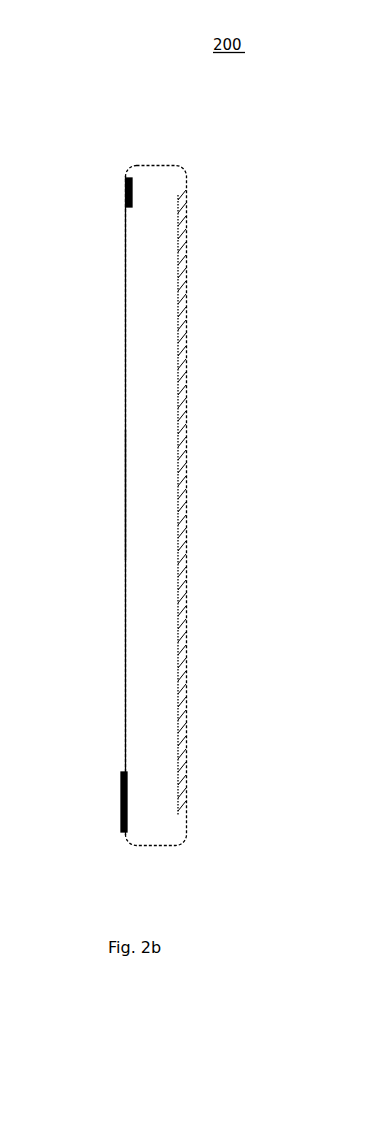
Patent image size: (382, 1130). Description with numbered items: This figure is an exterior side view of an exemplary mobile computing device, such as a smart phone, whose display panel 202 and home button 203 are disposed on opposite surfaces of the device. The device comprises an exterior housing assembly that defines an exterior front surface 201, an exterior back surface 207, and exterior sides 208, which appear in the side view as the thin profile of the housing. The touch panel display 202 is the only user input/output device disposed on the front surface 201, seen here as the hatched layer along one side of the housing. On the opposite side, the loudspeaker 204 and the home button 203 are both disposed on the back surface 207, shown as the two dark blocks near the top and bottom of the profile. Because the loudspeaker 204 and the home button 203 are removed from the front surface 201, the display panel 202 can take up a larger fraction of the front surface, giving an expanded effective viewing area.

The exterior front surface 201 is at (186, 193).
The display panel 202 is at (189, 320).
The home button 203 is at (121, 817).
The loudspeaker 204 is at (124, 186).
The exterior back surface 207 is at (122, 512).
The exterior sides 208 is at (148, 597).